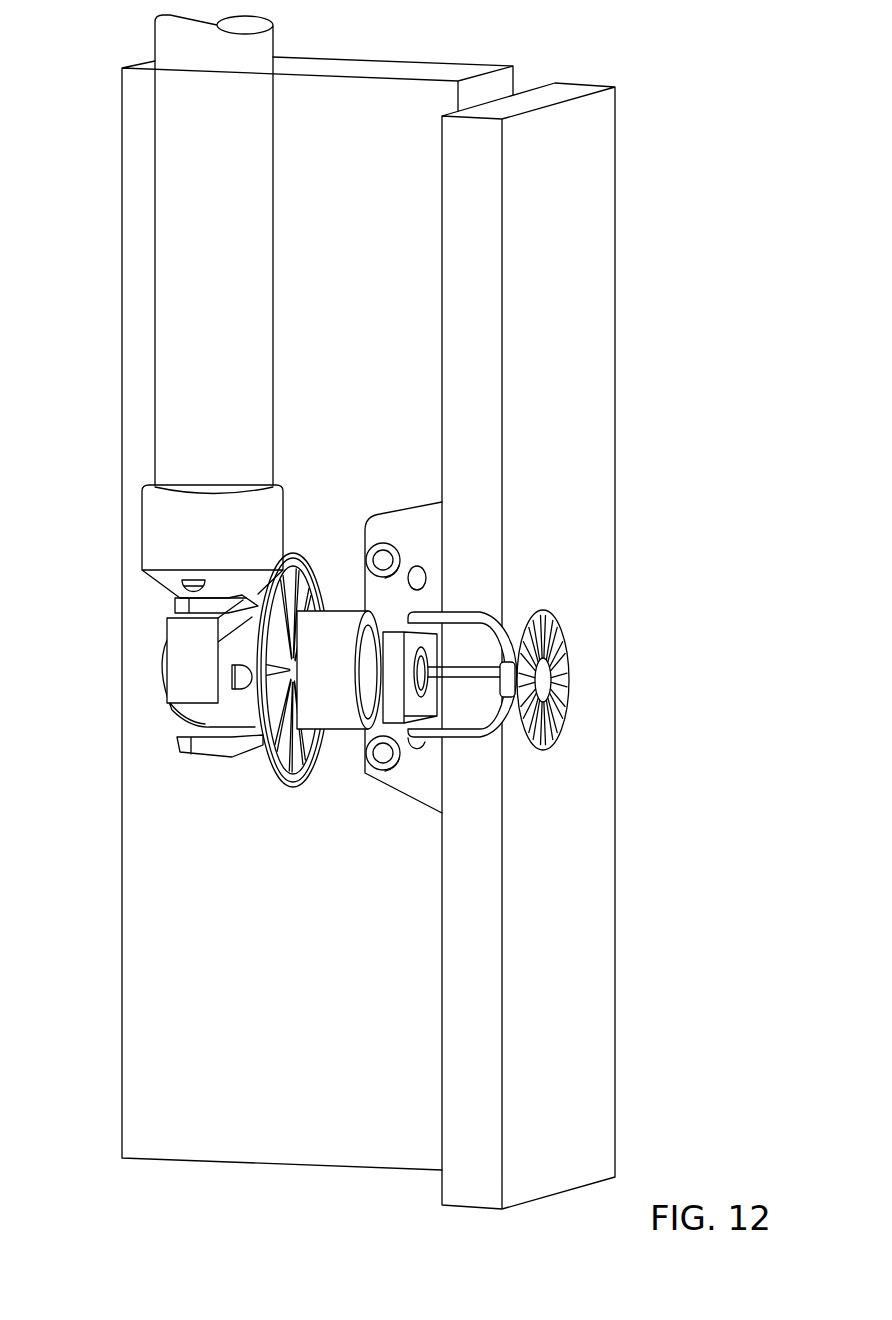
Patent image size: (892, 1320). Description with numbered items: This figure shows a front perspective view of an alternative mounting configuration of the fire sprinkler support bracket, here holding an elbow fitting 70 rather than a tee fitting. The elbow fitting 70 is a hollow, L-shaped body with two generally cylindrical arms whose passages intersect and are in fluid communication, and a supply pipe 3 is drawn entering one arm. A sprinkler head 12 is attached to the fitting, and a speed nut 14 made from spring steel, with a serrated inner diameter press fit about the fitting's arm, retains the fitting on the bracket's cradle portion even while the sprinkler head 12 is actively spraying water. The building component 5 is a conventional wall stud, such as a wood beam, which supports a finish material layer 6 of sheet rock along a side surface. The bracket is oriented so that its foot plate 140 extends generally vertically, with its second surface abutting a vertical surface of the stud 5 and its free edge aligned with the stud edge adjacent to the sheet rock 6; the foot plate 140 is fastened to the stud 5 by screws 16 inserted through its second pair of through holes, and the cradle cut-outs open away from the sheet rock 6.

The supply pipe 3 is at (180, 395).
The building component 5 is at (130, 1040).
The finish material layer 6 is at (378, 551).
The sprinkler head 12 is at (503, 633).
The speed nut 14 is at (295, 747).
The screws 16 is at (380, 764).
The elbow fitting 70 is at (170, 663).
The foot plate 140 is at (434, 797).